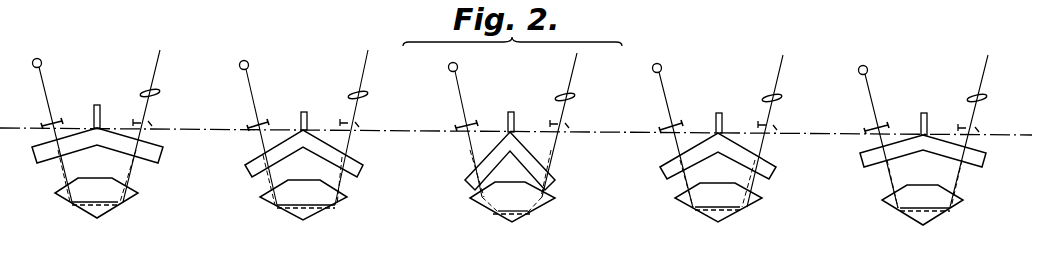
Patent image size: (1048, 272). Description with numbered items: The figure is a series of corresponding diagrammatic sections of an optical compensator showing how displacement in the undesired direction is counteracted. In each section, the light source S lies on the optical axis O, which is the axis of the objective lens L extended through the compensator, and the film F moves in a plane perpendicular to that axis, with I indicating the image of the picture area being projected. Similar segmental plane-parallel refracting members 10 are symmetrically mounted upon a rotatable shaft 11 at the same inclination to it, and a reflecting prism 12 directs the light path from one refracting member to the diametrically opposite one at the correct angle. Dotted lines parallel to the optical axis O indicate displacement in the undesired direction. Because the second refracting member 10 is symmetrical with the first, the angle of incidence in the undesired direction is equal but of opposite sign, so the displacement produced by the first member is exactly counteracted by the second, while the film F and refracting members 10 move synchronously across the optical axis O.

The light source S is at (33, 59).
The optical axis O is at (43, 78).
The objective lens L is at (158, 91).
The film F is at (44, 123).
The image I is at (150, 125).
The segmental plane-parallel refracting member 10 is at (118, 140).
The rotatable shaft 11 is at (513, 121).
The reflecting prism 12 is at (127, 200).